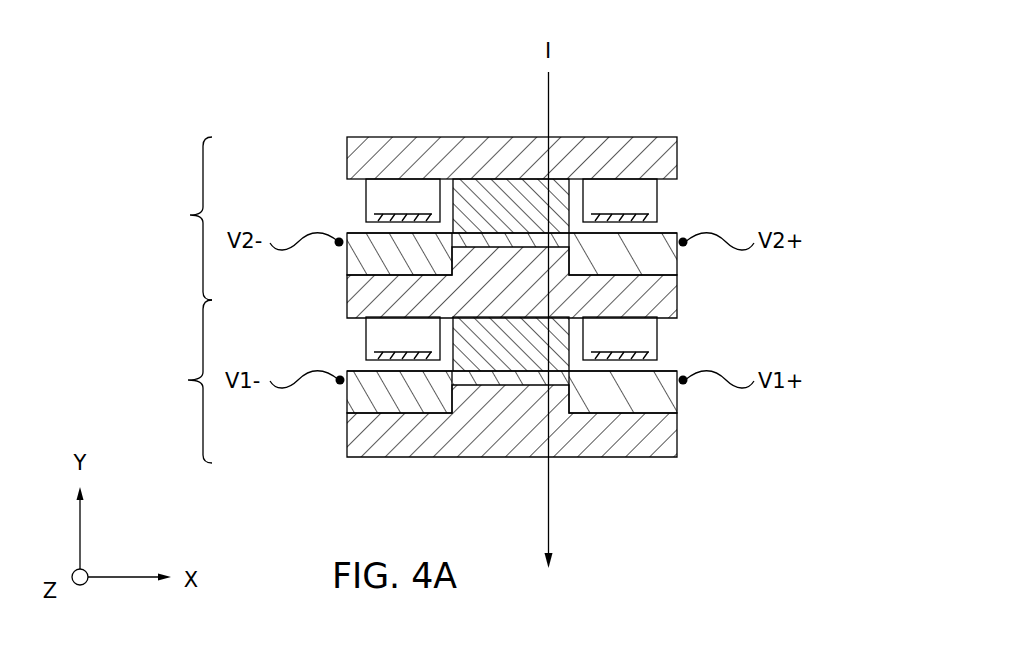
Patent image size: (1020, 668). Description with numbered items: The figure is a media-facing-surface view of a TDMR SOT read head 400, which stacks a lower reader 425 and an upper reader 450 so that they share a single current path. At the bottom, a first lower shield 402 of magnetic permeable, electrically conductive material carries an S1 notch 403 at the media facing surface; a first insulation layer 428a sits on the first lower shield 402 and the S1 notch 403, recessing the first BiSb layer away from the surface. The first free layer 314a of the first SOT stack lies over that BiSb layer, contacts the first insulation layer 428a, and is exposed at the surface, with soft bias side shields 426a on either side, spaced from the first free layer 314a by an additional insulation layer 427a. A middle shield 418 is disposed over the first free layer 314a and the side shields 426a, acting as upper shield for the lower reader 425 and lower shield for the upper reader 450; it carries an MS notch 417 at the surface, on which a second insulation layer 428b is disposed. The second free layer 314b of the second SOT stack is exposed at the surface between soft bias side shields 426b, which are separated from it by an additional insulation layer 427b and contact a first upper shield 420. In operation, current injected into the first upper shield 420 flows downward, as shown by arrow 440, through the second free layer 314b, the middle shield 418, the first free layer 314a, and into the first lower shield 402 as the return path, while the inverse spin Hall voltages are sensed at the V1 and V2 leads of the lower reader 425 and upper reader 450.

The TDMR SOT read head 400 is at (689, 38).
The first upper shield 420 is at (487, 169).
The SB side shields 426b is at (511, 200).
The second free layer 314b is at (486, 216).
The additional insulation layer 427b is at (376, 227).
The second insulation layer 428b is at (598, 264).
The MS notch 417 is at (489, 278).
The middle shield 418 is at (367, 309).
The upper reader 450 is at (174, 218).
The SB side shields 426a is at (511, 338).
The first free layer 314a is at (486, 354).
The additional insulation layer 427a is at (376, 365).
The first insulation layer 428a is at (598, 402).
The S1 notch 403 is at (489, 416).
The first lower shield 402 is at (367, 447).
The lower reader 425 is at (173, 381).
The arrow 440 is at (549, 517).